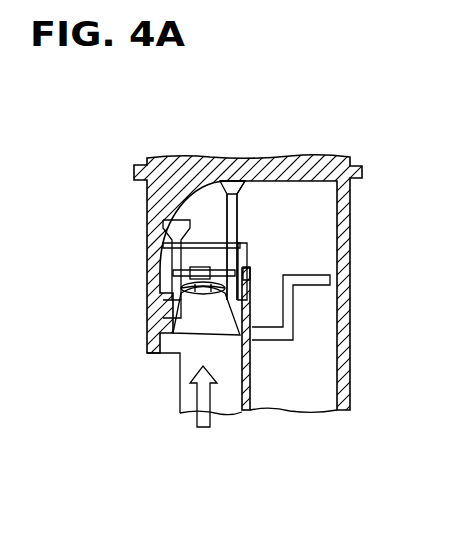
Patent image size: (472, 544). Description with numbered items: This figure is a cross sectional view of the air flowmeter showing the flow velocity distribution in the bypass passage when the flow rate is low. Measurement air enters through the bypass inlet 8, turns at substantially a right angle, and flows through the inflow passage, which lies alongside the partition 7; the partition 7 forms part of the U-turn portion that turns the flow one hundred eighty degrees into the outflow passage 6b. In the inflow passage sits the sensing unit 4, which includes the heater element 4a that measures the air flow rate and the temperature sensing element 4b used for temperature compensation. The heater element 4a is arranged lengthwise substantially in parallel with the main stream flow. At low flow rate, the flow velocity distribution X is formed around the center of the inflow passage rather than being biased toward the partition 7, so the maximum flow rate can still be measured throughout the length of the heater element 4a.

The sensing unit 4 is at (137, 253).
The heater element 4a is at (200, 270).
The temperature sensing element 4b is at (198, 284).
The flow velocity distribution X is at (162, 302).
The outflow passage 6b is at (323, 368).
The partition 7 is at (243, 382).
The bypass inlet 8 is at (168, 383).